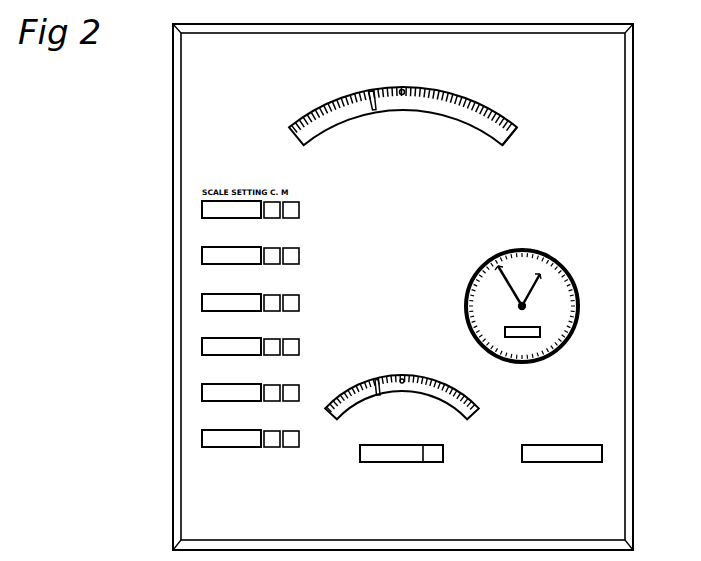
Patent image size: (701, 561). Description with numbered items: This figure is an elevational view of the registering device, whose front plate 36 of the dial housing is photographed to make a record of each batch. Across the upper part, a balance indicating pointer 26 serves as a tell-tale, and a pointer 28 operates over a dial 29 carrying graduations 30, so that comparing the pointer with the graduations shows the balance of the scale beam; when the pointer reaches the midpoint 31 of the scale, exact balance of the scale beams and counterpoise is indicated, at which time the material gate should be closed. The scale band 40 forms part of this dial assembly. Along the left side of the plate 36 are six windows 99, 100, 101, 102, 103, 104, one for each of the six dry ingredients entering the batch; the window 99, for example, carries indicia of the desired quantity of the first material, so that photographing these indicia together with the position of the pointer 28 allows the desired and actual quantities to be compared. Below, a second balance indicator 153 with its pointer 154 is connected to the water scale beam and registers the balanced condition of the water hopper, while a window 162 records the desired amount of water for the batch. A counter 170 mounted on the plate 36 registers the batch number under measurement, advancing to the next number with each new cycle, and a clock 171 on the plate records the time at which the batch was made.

The balance indicating pointer 26 is at (347, 87).
The pointer 28 is at (372, 90).
The dial 29 is at (504, 123).
The graduations 30 is at (468, 100).
The midpoint 31 is at (403, 89).
The front plate 36 is at (638, 349).
The aggregate scale band 40 is at (512, 128).
The window 99 is at (202, 209).
The window 100 is at (202, 255).
The window 101 is at (202, 302).
The window 102 is at (202, 346).
The window 103 is at (202, 392).
The window 104 is at (202, 438).
The second balance indicator 153 is at (477, 408).
The pointer 154 is at (381, 380).
The window 162 is at (416, 456).
The counter 170 is at (602, 452).
The clock 171 is at (584, 287).